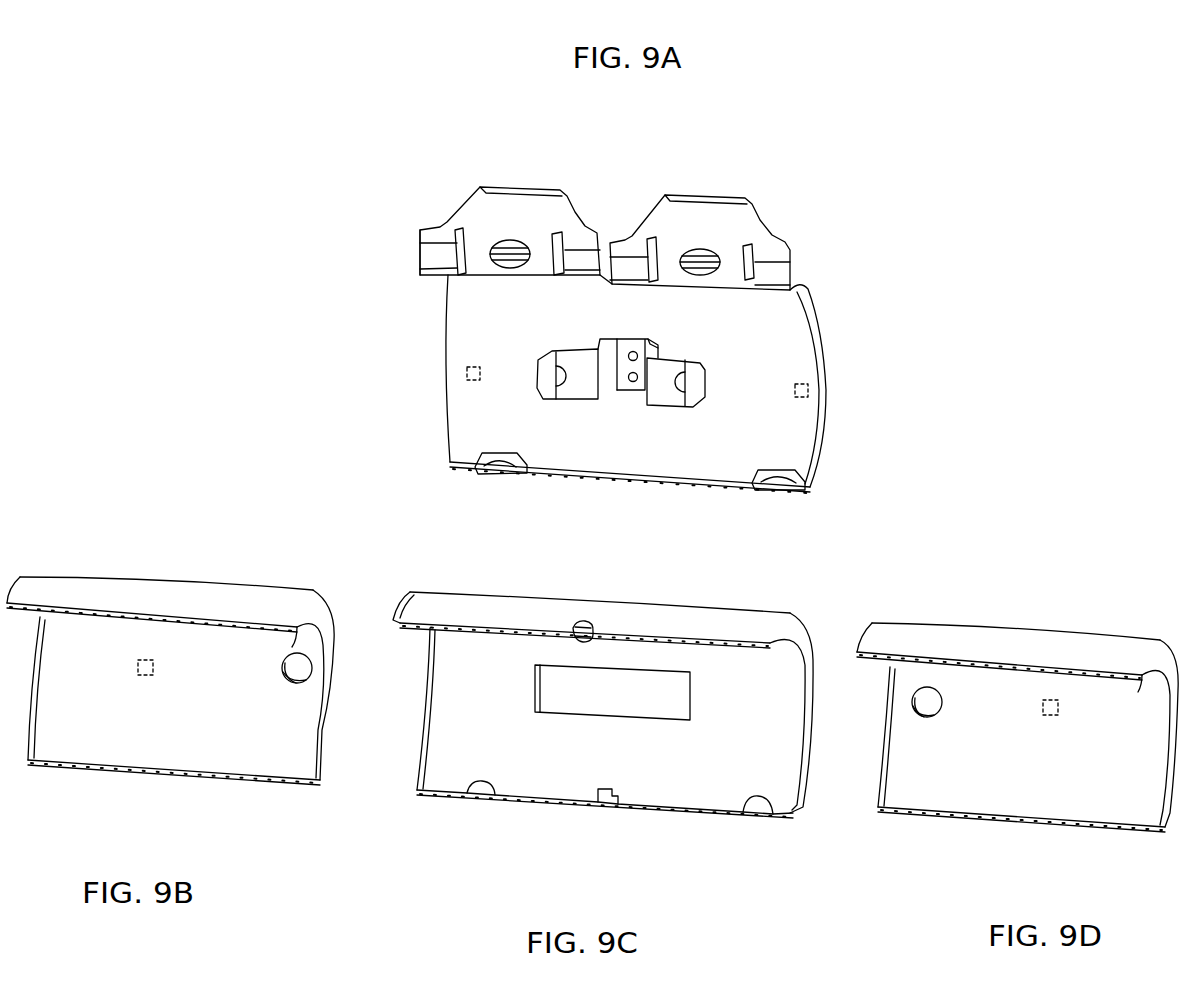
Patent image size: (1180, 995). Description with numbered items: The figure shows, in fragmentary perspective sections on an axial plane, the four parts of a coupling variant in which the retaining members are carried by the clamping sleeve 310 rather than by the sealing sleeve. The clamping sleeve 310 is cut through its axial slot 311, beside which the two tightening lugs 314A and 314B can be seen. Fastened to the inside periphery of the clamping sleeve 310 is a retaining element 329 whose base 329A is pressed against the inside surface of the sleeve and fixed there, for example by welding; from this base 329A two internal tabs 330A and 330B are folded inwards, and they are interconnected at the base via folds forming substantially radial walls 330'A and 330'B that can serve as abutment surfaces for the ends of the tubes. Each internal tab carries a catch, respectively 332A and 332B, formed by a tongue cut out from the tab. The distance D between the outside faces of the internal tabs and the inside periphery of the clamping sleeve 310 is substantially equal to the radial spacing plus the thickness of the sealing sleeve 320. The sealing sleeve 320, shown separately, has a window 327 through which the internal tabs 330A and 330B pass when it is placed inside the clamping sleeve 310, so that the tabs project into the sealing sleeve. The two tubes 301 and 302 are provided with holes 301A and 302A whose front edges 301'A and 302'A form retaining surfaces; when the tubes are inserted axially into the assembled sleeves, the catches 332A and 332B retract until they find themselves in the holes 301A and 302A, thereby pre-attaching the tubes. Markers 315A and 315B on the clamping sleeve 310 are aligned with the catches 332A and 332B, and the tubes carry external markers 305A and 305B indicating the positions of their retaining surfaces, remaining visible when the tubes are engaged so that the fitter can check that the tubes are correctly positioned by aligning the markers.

In FIG. 9A, the clamping sleeve 310 is at (804, 324).
In FIG. 9A, the axial slot 311 is at (404, 271).
In FIG. 9A, the tightening lug 314A is at (523, 205).
In FIG. 9A, the tightening lug 314B is at (712, 214).
In FIG. 9A, the marker 315A is at (466, 375).
In FIG. 9A, the marker 315B is at (810, 392).
In FIG. 9A, the retaining element 329 is at (633, 375).
In FIG. 9A, the base 329A is at (625, 388).
In FIG. 9A, the internal tab 330A is at (572, 399).
In FIG. 9A, the internal tab 330B is at (678, 405).
In FIG. 9A, the radial wall 330'A is at (606, 343).
In FIG. 9A, the radial wall 330'B is at (681, 323).
In FIG. 9A, the catch 332A is at (544, 352).
In FIG. 9A, the catch 332B is at (704, 355).
In FIG. 9A, the distance D is at (607, 327).
In FIG. 9B, the tube 301 is at (170, 662).
In FIG. 9B, the hole 301A is at (292, 668).
In FIG. 9B, the front edge 301'A is at (283, 696).
In FIG. 9B, the marker 305A is at (145, 677).
In FIG. 9C, the sealing sleeve 320 is at (624, 618).
In FIG. 9C, the window 327 is at (672, 696).
In FIG. 9D, the tube 302 is at (1017, 710).
In FIG. 9D, the hole 302A is at (937, 702).
In FIG. 9D, the front edge 302'A is at (928, 731).
In FIG. 9D, the marker 305B is at (1050, 717).